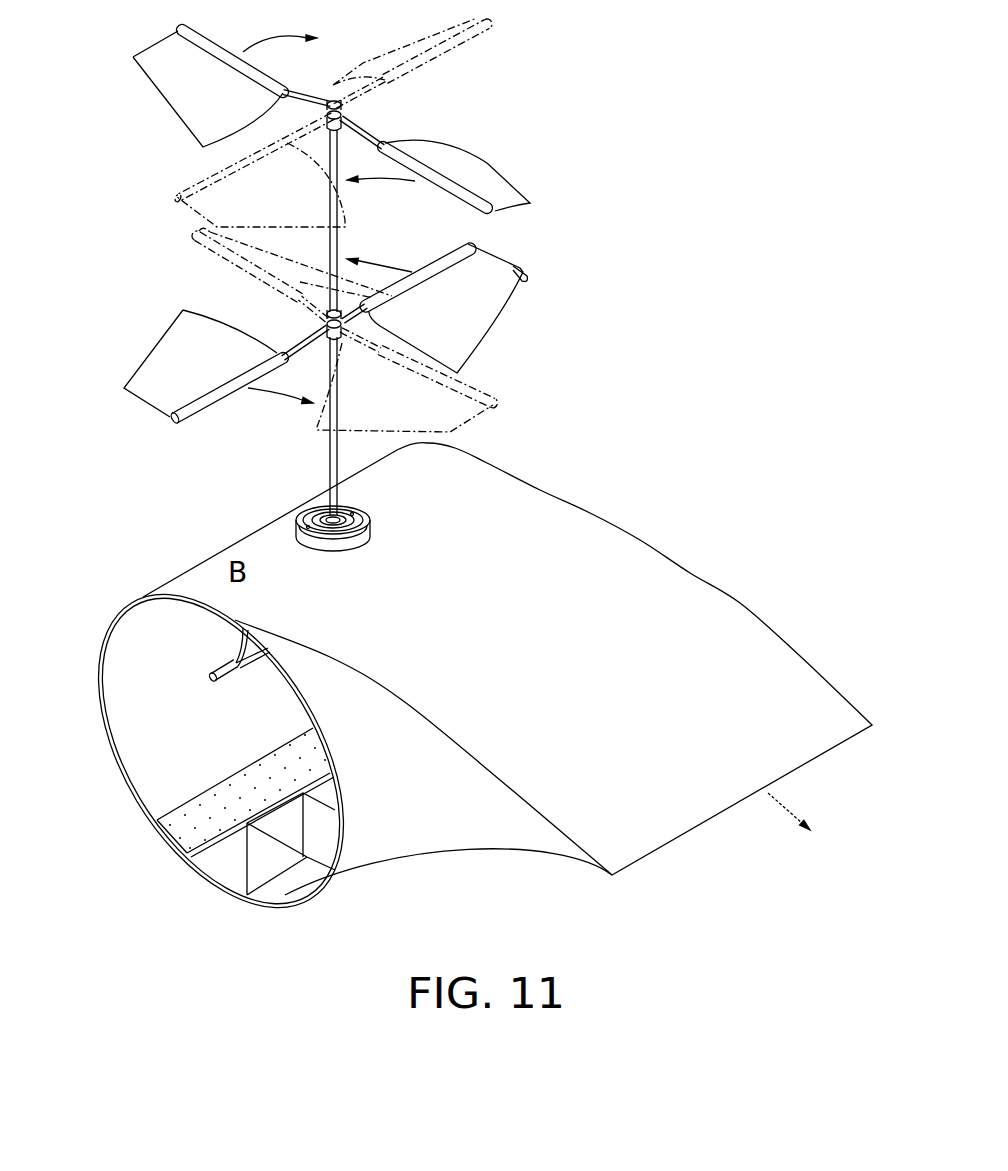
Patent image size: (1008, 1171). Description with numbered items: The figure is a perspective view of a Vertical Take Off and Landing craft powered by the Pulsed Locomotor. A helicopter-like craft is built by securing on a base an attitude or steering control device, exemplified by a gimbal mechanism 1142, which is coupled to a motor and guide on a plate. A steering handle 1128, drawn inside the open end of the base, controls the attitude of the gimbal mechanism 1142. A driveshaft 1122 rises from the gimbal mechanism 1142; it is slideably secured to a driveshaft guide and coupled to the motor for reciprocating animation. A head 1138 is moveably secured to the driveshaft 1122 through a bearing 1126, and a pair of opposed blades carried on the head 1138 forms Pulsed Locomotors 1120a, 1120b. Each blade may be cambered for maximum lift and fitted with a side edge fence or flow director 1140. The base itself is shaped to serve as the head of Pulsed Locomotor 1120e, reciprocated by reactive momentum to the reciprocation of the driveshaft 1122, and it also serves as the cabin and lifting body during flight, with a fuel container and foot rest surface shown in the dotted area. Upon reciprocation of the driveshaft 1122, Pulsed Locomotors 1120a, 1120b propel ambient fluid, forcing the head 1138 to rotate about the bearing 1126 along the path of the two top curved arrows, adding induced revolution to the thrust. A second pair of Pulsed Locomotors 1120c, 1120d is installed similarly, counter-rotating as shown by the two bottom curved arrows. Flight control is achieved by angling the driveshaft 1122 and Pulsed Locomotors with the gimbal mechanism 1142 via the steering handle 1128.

The Pulsed Locomotor 1120a is at (135, 102).
The Pulsed Locomotor 1120b is at (495, 135).
The Pulsed Locomotor 1120c is at (121, 335).
The Pulsed Locomotor 1120d is at (540, 319).
The Pulsed Locomotor 1120e is at (645, 513).
The driveshaft 1122 is at (326, 478).
The bearing 1126 is at (327, 325).
The steering handle 1128 is at (222, 676).
The head 1138 is at (343, 112).
The flow director 1140 is at (524, 272).
The gimbal mechanism 1142 is at (298, 513).